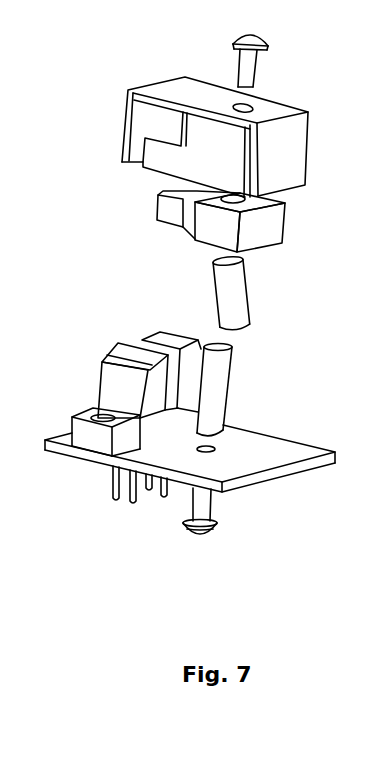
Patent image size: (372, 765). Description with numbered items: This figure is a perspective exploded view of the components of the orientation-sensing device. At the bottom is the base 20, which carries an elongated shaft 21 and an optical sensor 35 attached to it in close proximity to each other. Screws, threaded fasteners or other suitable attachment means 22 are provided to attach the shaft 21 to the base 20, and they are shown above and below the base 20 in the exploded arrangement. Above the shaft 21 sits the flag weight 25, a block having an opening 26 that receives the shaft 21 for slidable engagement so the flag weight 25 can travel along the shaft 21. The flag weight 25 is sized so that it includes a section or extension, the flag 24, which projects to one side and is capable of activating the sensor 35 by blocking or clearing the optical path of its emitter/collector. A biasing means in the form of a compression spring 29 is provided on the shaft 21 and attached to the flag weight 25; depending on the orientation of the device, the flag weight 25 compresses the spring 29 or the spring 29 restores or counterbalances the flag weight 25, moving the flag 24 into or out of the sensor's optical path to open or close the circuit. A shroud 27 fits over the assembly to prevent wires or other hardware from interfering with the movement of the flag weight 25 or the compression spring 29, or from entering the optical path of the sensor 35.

The base 20 is at (280, 475).
The elongated shaft 21 is at (217, 390).
The attachment means 22 is at (252, 65).
The flag 24 is at (170, 213).
The flag weight 25 is at (267, 235).
The opening 26 is at (250, 207).
The shroud 27 is at (145, 122).
The compression spring 29 is at (227, 298).
The sensor 35 is at (118, 382).